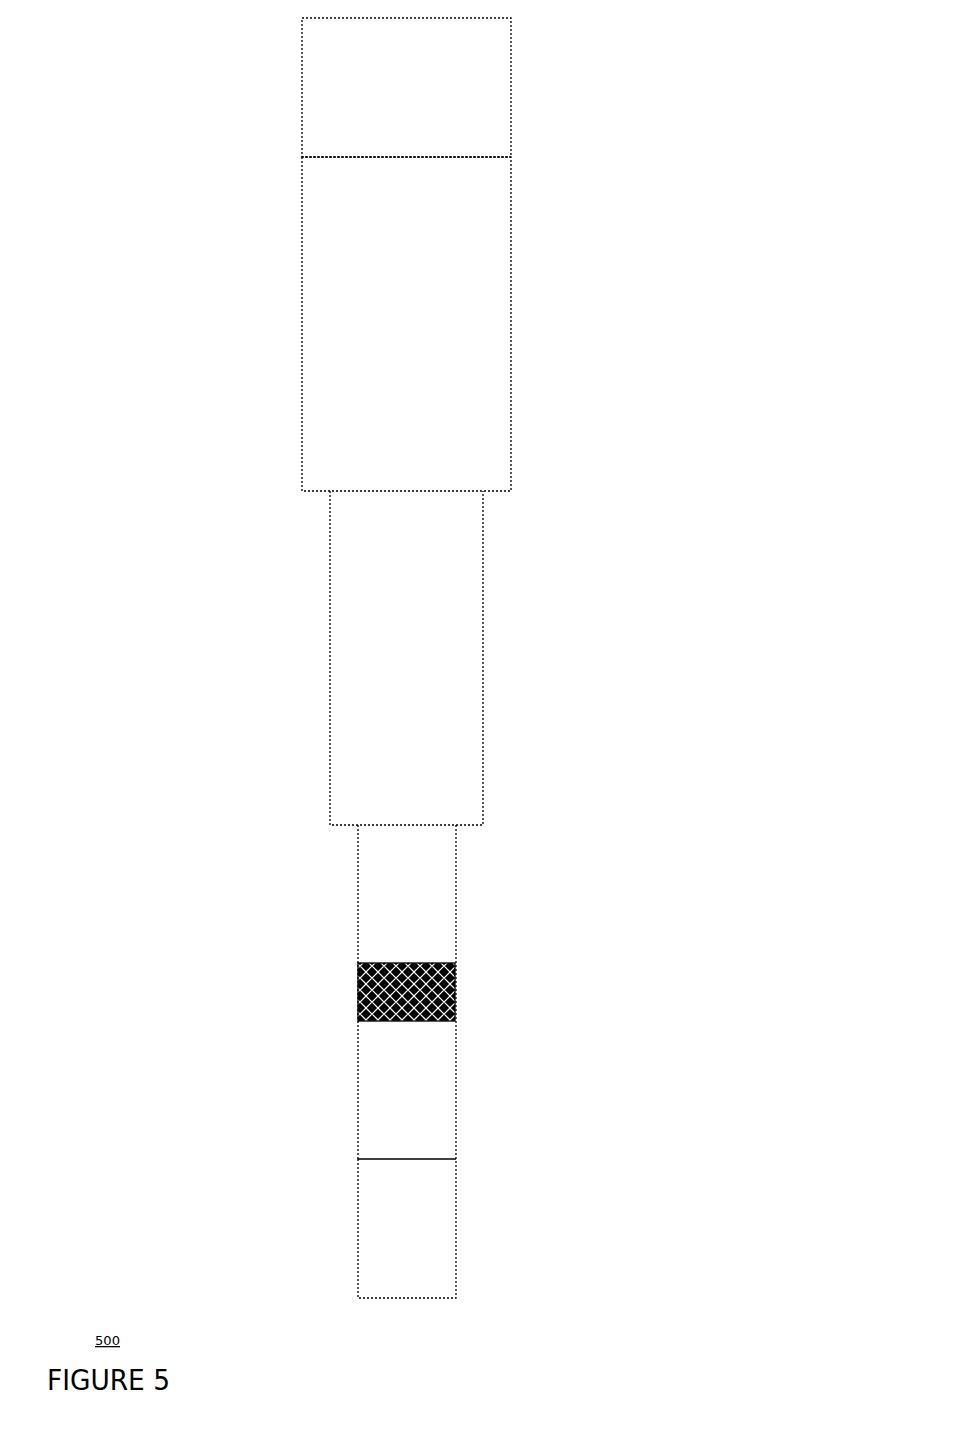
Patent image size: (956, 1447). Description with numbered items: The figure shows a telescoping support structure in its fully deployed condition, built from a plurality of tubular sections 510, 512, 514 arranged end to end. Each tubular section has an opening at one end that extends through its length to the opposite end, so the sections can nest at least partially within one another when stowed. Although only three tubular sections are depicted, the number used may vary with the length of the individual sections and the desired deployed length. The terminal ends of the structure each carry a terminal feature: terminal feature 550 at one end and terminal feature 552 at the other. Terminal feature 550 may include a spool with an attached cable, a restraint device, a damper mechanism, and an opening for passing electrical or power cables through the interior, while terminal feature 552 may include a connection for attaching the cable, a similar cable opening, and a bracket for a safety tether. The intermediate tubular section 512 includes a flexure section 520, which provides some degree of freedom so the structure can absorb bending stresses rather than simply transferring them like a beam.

The terminal feature 550 is at (512, 135).
The tubular section 510 is at (512, 335).
The tubular section 512 is at (484, 710).
The tubular section 514 is at (457, 1080).
The flexure section 520 is at (358, 985).
The terminal feature 552 is at (457, 1240).